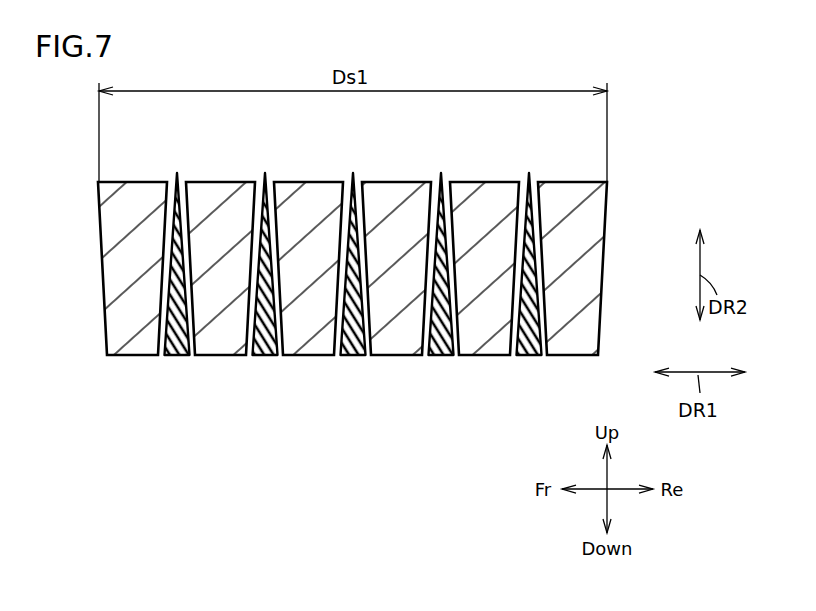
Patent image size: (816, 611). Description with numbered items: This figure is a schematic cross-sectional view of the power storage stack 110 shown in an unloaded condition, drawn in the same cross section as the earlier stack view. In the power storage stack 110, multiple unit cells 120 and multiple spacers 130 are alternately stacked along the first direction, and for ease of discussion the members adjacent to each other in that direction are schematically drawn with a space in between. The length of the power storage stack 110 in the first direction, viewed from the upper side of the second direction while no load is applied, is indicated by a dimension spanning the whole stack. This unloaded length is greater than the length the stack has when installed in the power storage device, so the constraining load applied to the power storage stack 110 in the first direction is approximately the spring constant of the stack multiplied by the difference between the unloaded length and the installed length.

The power storage stack 110 is at (622, 210).
The unit cell 120 is at (135, 194).
The spacer 130 is at (176, 350).